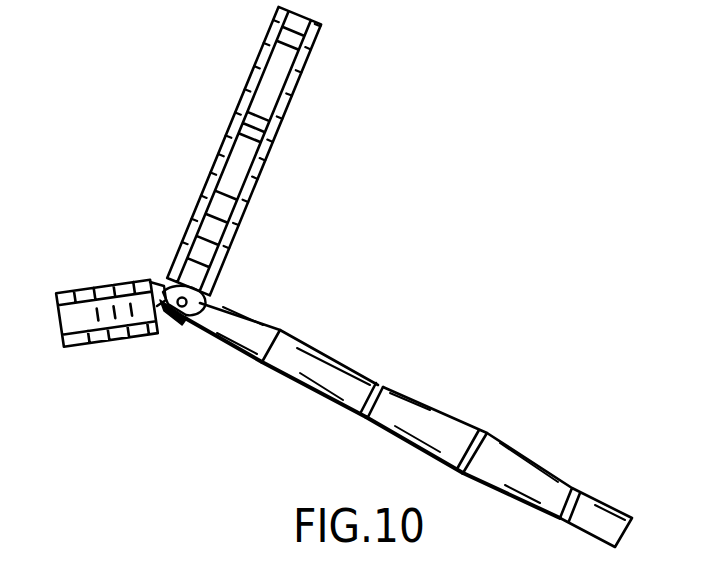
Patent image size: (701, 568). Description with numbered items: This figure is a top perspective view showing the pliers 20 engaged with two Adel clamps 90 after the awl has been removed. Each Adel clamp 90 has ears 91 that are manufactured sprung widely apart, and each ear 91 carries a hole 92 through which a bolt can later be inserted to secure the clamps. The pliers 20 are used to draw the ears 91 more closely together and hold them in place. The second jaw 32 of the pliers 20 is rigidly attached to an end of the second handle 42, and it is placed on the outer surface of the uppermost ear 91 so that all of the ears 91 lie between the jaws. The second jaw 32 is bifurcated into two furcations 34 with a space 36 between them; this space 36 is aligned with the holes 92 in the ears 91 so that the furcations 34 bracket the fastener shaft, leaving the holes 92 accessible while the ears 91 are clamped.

The pliers 20 is at (382, 378).
The second jaw 32 is at (224, 331).
The furcations 34 is at (217, 268).
The space 36 is at (205, 300).
The second handle 42 is at (441, 413).
The Adel clamp 90 is at (103, 280).
The ears 91 is at (167, 287).
The hole 92 is at (205, 308).